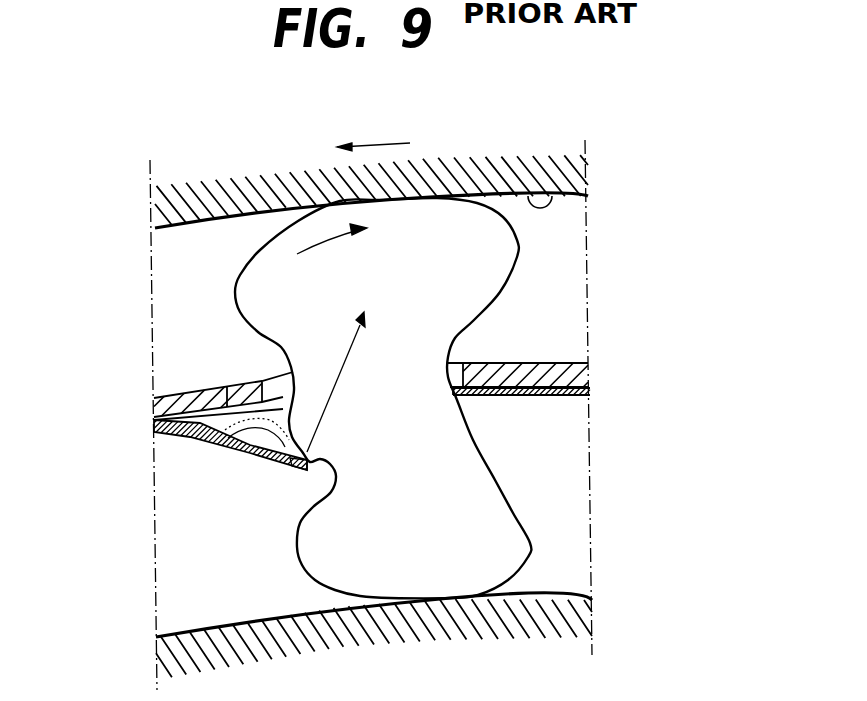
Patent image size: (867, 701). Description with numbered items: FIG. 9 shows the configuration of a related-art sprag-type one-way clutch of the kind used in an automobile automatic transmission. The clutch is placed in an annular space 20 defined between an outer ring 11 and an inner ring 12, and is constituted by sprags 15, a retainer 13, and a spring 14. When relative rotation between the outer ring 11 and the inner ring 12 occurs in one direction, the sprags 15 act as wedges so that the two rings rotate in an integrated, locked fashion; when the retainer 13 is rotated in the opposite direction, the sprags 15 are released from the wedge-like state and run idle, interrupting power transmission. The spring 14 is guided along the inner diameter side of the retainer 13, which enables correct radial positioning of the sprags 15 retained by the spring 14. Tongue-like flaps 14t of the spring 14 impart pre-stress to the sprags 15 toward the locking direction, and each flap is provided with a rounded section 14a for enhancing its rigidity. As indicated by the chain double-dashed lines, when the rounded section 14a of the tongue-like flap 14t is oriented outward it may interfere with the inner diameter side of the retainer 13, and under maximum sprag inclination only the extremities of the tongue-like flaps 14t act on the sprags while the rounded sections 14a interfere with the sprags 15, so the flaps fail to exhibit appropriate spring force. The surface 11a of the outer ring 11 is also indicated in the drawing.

The outer ring 11 is at (483, 172).
The inner surface of upper wall 11a is at (550, 196).
The inner ring 12 is at (552, 602).
The retainer 13 is at (550, 363).
The spring 14 is at (550, 397).
The rounded section 14a is at (233, 378).
The tongue-like flap 14t is at (247, 455).
The sprag 15 is at (505, 243).
The annular space 20 is at (160, 356).